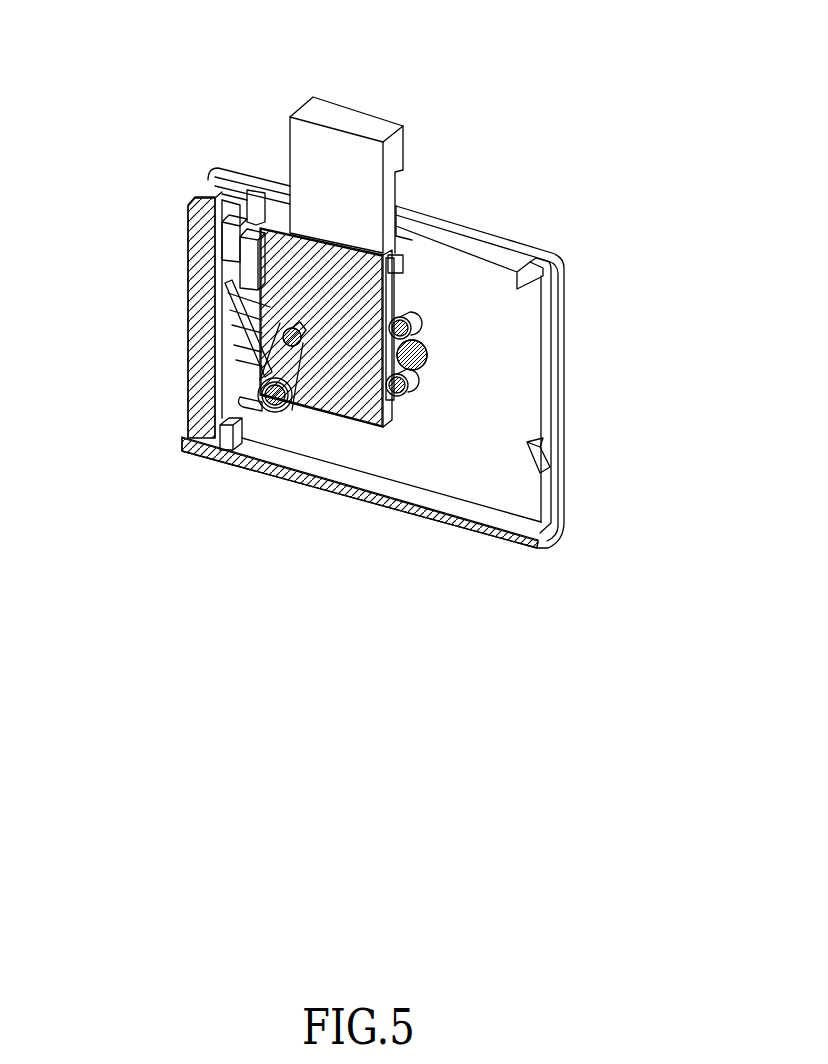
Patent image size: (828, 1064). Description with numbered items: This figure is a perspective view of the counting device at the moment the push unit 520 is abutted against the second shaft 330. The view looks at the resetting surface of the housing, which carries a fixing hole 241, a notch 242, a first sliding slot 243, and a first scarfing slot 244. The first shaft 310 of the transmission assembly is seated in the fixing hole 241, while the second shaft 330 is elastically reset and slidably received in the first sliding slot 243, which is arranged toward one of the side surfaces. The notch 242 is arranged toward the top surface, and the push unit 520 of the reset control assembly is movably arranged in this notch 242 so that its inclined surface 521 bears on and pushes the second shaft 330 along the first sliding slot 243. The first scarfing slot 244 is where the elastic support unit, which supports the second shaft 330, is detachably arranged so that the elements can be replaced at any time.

The fixing hole 241 is at (432, 362).
The notch 242 is at (396, 236).
The first sliding slot 243 is at (253, 315).
The first scarfing slot 244 is at (247, 207).
The first shaft 310 is at (415, 388).
The second shaft 330 is at (290, 340).
The push unit 520 is at (350, 122).
The inclined surface 521 is at (298, 331).